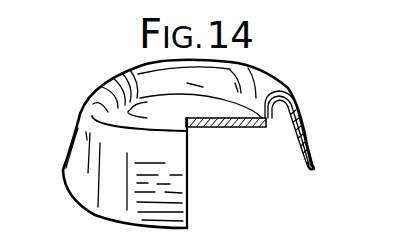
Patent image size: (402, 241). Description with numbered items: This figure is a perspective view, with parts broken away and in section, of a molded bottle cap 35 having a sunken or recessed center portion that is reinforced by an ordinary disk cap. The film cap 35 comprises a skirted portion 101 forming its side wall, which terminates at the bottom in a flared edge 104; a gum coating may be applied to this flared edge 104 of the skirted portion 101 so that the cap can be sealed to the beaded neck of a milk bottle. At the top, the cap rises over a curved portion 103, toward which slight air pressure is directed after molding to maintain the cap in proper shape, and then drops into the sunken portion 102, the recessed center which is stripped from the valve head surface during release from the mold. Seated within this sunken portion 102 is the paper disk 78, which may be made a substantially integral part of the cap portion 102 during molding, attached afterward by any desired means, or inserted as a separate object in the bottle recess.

The film cap 35 is at (77, 123).
The paper disk 78 is at (248, 128).
The skirted portion 101 is at (305, 133).
The sunken portion 102 is at (143, 115).
The curved portion 103 is at (291, 93).
The flared edge 104 is at (318, 169).